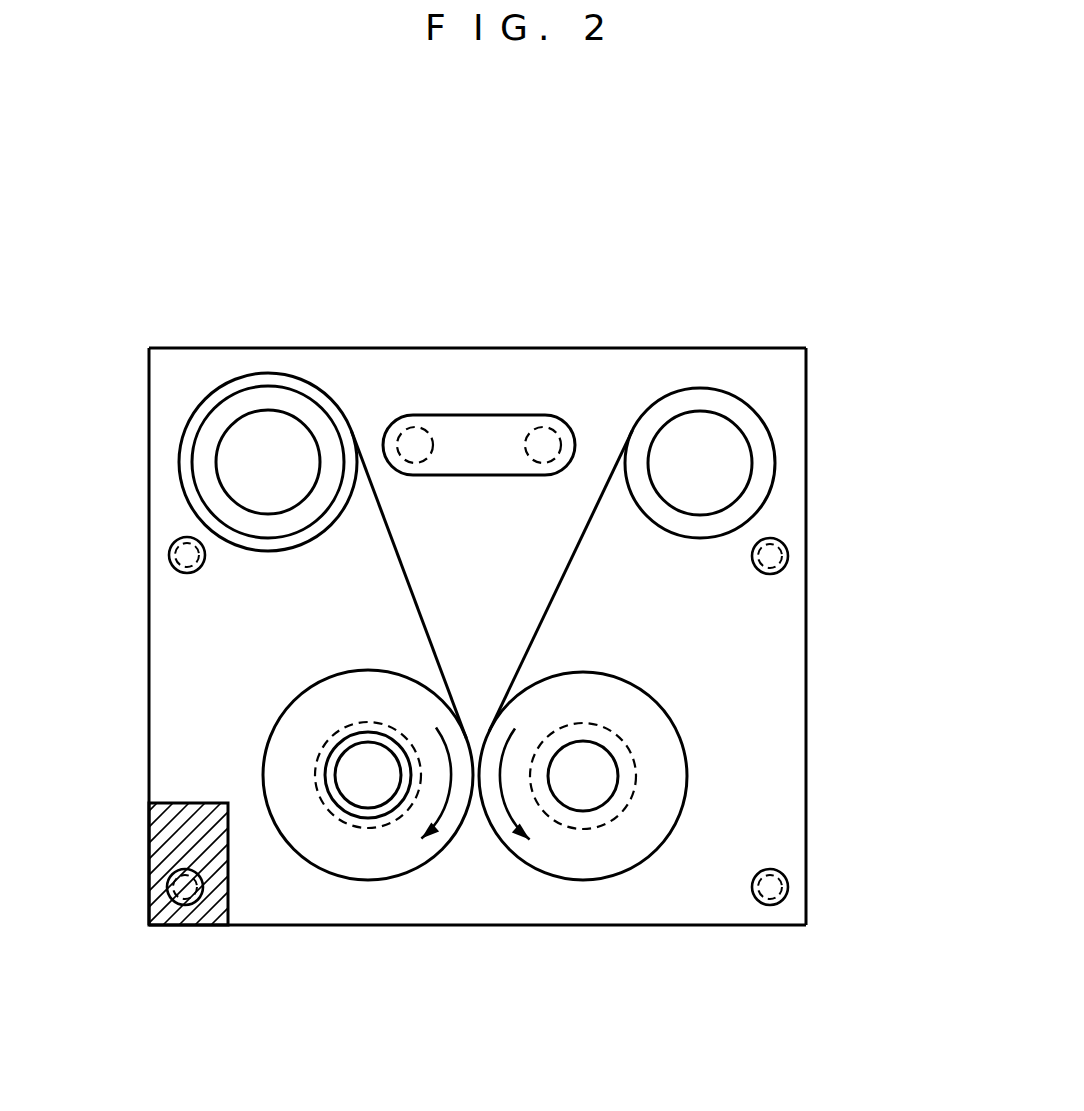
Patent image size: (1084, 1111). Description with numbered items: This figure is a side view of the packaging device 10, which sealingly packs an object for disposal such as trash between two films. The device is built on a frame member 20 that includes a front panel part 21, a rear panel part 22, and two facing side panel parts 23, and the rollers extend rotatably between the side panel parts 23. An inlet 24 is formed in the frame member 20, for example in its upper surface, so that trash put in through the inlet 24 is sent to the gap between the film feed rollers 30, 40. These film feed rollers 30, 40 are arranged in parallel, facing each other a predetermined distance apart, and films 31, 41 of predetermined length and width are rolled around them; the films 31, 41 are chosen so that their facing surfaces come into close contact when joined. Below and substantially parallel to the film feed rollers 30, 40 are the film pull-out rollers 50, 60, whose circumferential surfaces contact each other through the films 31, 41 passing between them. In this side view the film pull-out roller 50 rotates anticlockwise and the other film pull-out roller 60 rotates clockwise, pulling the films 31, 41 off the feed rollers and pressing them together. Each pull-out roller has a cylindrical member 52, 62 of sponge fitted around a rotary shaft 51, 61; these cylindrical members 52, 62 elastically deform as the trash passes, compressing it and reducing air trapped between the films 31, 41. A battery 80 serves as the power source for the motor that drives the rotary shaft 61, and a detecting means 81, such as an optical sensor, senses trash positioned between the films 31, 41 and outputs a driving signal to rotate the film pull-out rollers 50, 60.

The packaging device 10 is at (788, 243).
The frame member 20 is at (810, 532).
The front panel part 21 is at (148, 632).
The rear panel part 22 is at (808, 583).
The side panel part 23 is at (172, 763).
The inlet 24 is at (388, 410).
The film feed roller 30 is at (737, 460).
The film 31 is at (752, 420).
The film feed roller 40 is at (237, 450).
The film 41 is at (243, 412).
The film pull-out roller 50 is at (692, 742).
The rotary shaft 51 is at (595, 797).
The cylindrical member 52 is at (672, 788).
The film pull-out roller 60 is at (297, 858).
The rotary shaft 61 is at (375, 793).
The cylindrical member 62 is at (280, 718).
The battery 80 is at (160, 878).
The detecting means 81 is at (523, 414).